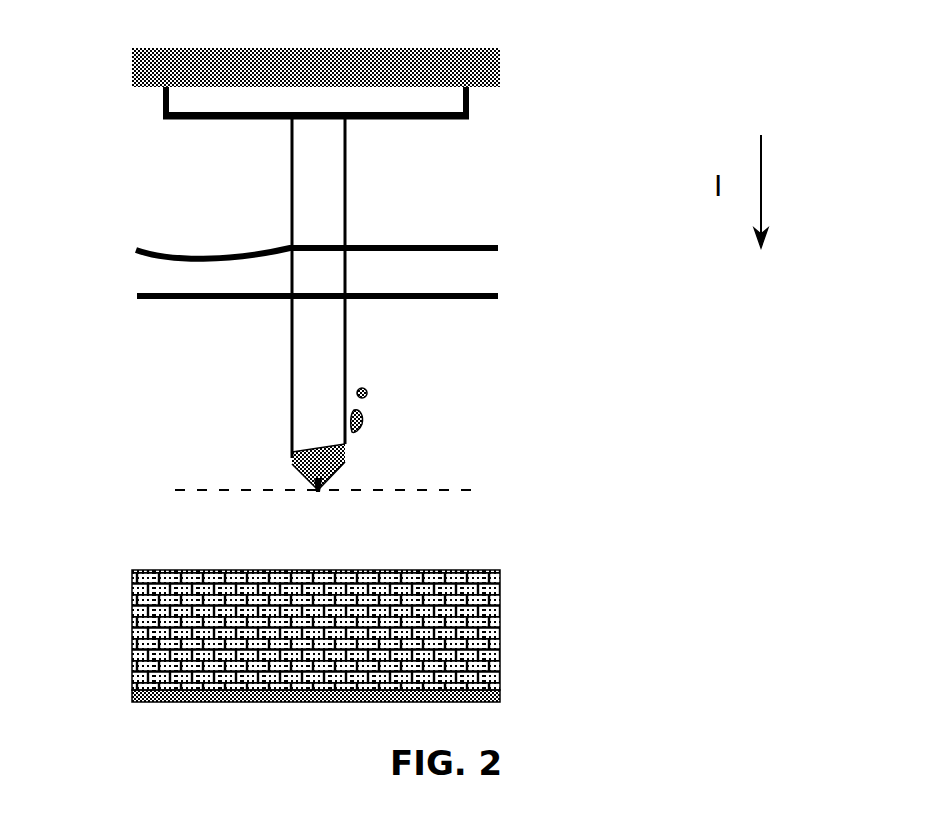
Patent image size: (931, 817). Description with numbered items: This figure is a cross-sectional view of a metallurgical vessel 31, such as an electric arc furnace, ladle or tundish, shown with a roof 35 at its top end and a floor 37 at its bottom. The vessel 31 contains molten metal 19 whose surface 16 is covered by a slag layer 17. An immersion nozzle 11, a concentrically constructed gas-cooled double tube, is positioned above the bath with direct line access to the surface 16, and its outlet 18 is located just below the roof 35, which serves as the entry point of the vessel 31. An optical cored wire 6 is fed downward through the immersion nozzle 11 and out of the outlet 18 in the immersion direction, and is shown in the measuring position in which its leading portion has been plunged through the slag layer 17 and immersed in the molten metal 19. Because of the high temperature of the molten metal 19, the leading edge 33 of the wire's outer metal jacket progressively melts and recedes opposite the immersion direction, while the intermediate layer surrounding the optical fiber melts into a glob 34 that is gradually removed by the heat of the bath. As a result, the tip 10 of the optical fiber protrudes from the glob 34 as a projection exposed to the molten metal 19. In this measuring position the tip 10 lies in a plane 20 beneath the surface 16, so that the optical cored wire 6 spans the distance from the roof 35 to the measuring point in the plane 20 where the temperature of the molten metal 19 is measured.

The metallurgical vessel 31 is at (102, 78).
The roof 35 is at (505, 65).
The immersion nozzle 11 is at (480, 99).
The outlet 18 is at (438, 123).
The optical cored wire 6 is at (287, 189).
The slag layer 17 is at (492, 268).
The surface 16 is at (505, 296).
The molten metal 19 is at (472, 332).
The leading edge 33 is at (315, 450).
The glob 34 is at (375, 418).
The plane 20 is at (483, 487).
The tip 10 is at (318, 494).
The floor 37 is at (505, 612).